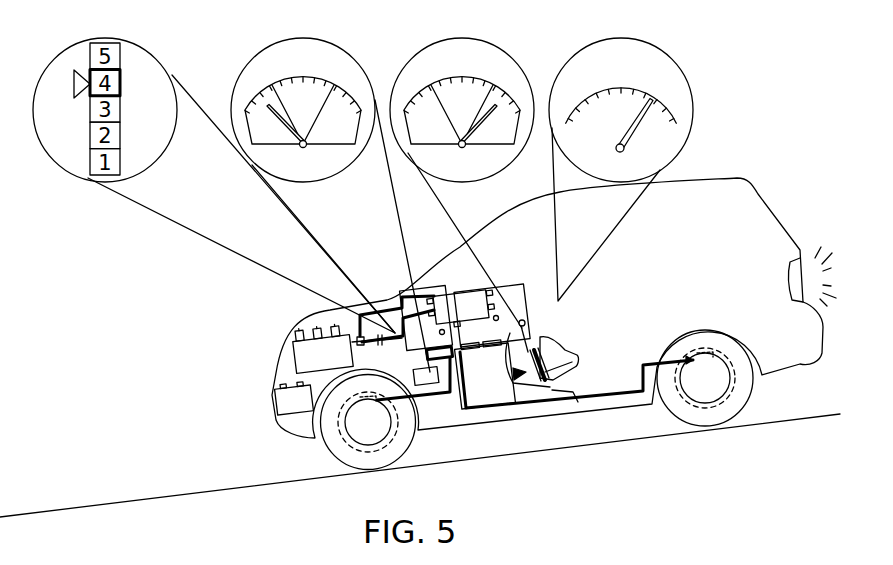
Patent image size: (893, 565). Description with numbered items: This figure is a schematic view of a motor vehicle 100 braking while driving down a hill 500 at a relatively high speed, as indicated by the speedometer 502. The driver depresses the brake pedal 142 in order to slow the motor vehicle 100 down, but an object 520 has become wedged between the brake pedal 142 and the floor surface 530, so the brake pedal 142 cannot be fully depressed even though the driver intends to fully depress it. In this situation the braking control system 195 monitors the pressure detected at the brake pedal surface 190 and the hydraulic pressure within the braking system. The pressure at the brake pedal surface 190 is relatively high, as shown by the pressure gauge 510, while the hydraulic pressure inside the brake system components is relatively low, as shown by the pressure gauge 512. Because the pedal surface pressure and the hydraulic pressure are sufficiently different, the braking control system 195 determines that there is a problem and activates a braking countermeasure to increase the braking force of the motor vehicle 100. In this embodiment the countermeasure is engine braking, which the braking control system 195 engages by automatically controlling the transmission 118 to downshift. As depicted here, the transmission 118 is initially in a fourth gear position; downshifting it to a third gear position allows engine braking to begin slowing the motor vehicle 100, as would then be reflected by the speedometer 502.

The motor vehicle 100 is at (728, 177).
The transmission 118 is at (397, 335).
The brake pedal 142 is at (517, 375).
The brake pedal surface 190 is at (532, 128).
The braking control system 195 is at (463, 262).
The hill 500 is at (92, 505).
The speedometer 502 is at (657, 102).
The pressure gauge 510 is at (437, 87).
The pressure gauge 512 is at (267, 92).
The object 520 is at (533, 387).
The floor surface 530 is at (587, 393).